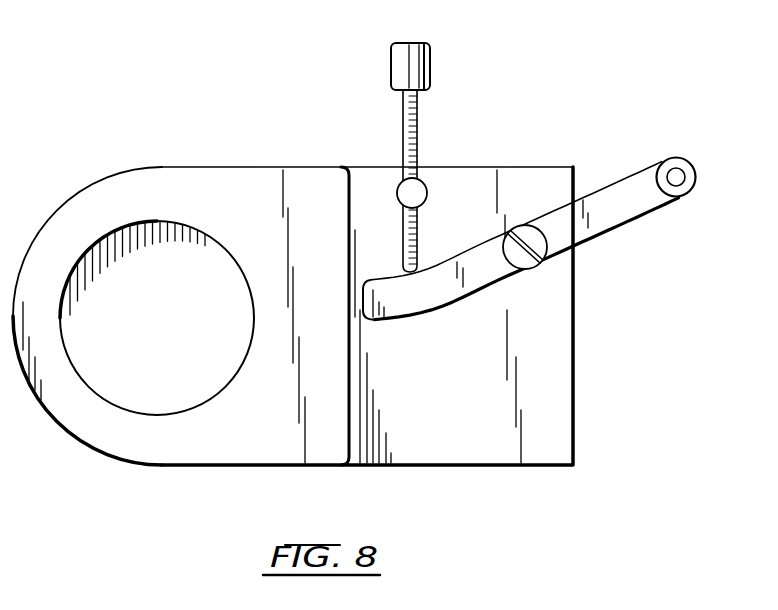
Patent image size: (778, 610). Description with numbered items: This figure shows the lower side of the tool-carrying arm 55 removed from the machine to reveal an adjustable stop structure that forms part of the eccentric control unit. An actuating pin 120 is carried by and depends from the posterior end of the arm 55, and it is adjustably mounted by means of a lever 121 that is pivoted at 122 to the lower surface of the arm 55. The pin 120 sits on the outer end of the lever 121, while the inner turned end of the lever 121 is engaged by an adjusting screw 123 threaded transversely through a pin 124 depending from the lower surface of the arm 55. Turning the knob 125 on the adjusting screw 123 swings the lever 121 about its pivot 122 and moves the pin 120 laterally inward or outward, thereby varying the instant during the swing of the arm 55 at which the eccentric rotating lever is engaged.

The tool-carrying arm 55 is at (560, 416).
The actuating pin 120 is at (678, 176).
The lever 121 is at (613, 215).
The pivot 122 is at (521, 263).
The adjusting screw 123 is at (417, 127).
The pin 124 is at (413, 197).
The knob 125 is at (408, 62).